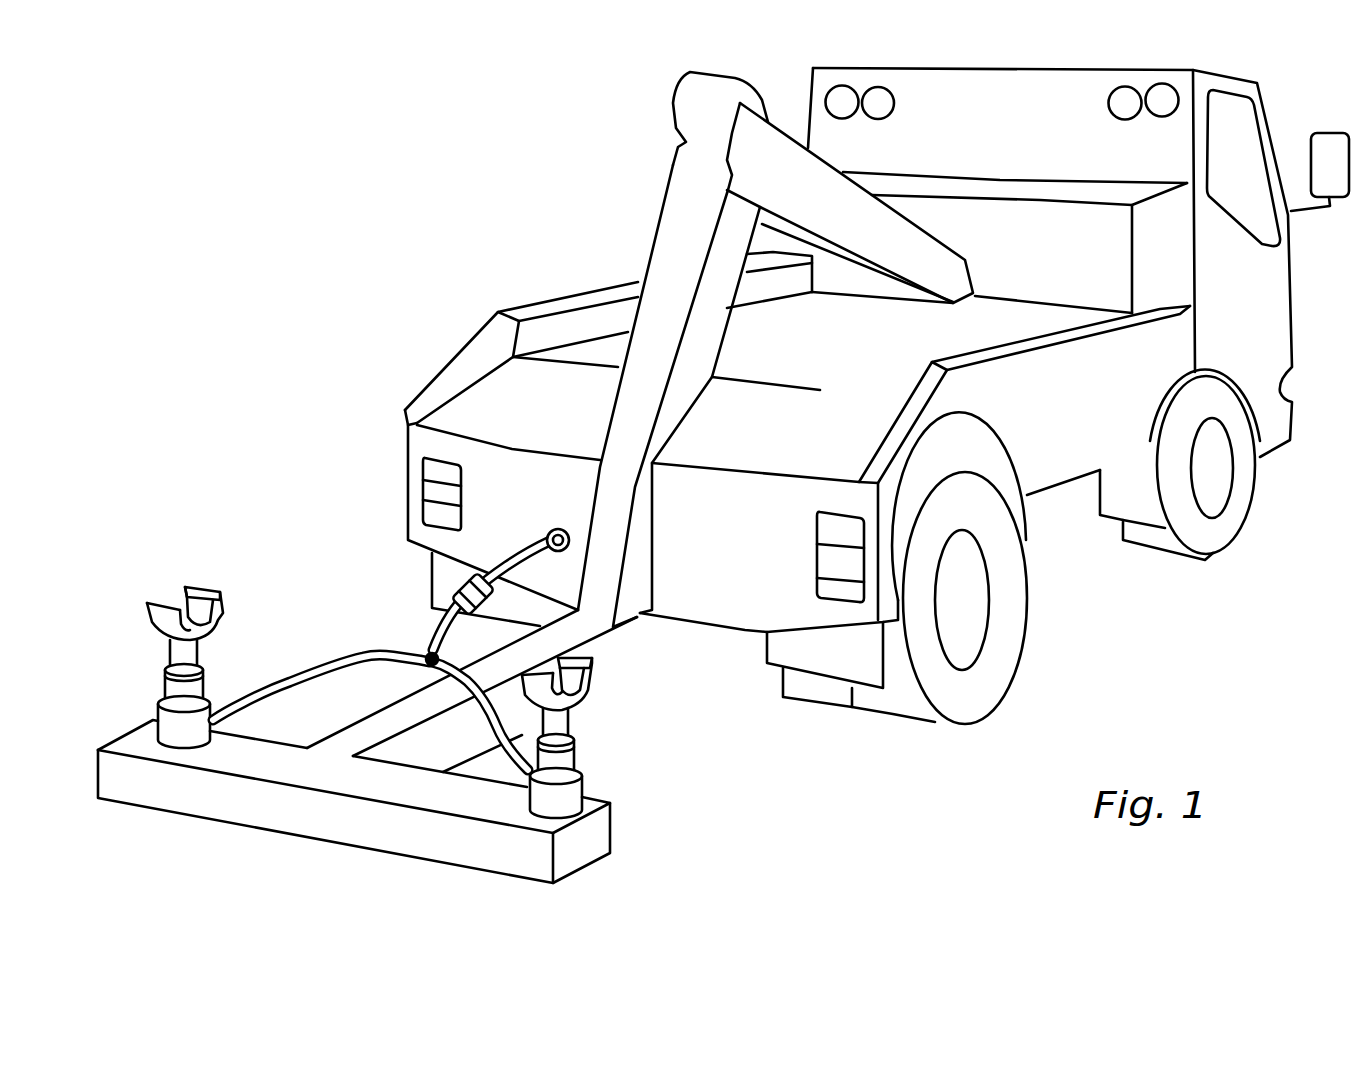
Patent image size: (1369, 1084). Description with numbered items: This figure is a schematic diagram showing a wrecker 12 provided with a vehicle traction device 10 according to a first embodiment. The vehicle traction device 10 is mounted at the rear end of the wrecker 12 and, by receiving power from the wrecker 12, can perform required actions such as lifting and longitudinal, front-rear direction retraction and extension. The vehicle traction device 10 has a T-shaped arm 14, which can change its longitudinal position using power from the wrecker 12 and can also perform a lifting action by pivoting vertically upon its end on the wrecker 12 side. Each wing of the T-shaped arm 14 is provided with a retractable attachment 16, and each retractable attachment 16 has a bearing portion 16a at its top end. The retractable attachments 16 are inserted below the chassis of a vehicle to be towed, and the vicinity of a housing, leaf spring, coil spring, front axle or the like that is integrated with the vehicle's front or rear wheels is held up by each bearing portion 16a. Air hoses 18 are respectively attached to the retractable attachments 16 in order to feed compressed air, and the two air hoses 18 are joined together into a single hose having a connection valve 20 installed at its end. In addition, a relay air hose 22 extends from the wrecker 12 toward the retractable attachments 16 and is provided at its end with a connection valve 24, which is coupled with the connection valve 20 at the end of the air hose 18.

The vehicle traction device 10 is at (400, 710).
The wrecker 12 is at (488, 243).
The T-shaped arm 14 is at (217, 795).
The retractable attachment 16 is at (400, 637).
The bearing portion 16a is at (207, 587).
The air hose 18 is at (288, 684).
The connection valve 20 is at (450, 614).
The relay air hose 22 is at (499, 562).
The connection valve 24 is at (456, 585).